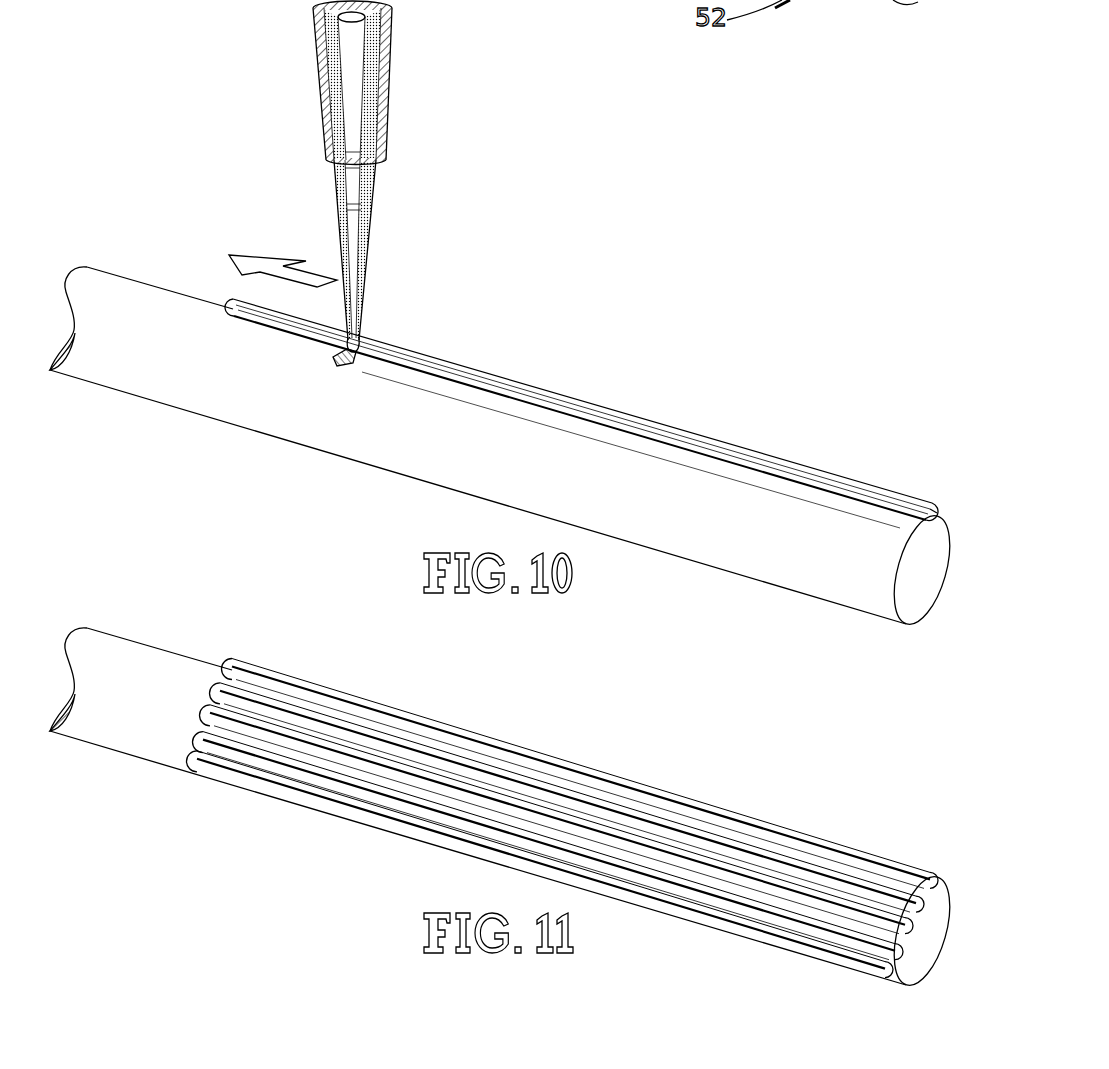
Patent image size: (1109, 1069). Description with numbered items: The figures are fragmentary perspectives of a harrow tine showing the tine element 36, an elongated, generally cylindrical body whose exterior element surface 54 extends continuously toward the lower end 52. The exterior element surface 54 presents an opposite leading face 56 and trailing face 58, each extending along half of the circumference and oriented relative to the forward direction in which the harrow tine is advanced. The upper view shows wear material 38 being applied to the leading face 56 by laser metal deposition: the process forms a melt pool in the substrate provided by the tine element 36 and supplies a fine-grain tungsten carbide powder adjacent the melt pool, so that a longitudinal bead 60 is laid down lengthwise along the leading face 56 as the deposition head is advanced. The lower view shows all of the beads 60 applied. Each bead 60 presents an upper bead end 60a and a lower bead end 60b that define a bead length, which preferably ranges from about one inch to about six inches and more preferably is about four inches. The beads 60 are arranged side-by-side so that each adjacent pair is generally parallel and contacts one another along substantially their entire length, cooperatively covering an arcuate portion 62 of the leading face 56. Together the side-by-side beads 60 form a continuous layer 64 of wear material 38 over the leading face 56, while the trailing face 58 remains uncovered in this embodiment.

In FIG. 10, the tine element 36 is at (127, 377).
In FIG. 11, the tine element 36 is at (127, 738).
In FIG. 11, the wear material 38 is at (295, 775).
In FIG. 10, the lower end 52 is at (793, 615).
In FIG. 11, the lower end 52 is at (793, 976).
In FIG. 10, the exterior element surface 54 is at (87, 290).
In FIG. 11, the exterior element surface 54 is at (87, 651).
In FIG. 10, the leading face 56 is at (133, 293).
In FIG. 11, the leading face 56 is at (137, 653).
In FIG. 10, the trailing face 58 is at (192, 413).
In FIG. 11, the trailing face 58 is at (192, 774).
In FIG. 10, the longitudinal bead 60 is at (627, 418).
In FIG. 11, the longitudinal bead 60 is at (627, 778).
In FIG. 11, the upper bead end 60a is at (207, 680).
In FIG. 11, the lower bead end 60b is at (910, 897).
In FIG. 11, the arcuate portion 62 is at (452, 677).
In FIG. 11, the continuous layer 64 is at (720, 822).